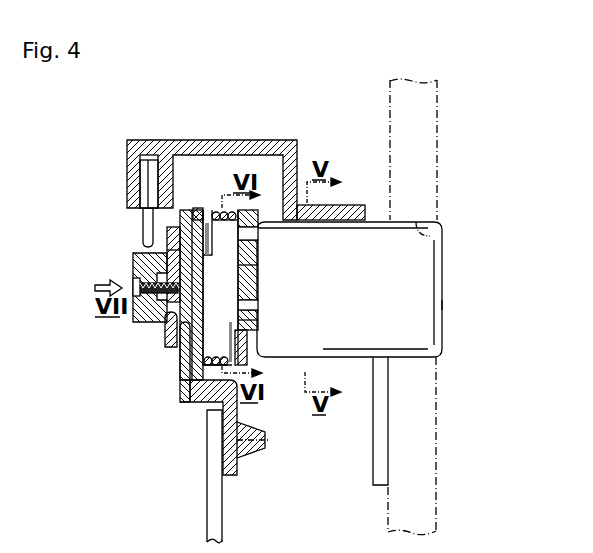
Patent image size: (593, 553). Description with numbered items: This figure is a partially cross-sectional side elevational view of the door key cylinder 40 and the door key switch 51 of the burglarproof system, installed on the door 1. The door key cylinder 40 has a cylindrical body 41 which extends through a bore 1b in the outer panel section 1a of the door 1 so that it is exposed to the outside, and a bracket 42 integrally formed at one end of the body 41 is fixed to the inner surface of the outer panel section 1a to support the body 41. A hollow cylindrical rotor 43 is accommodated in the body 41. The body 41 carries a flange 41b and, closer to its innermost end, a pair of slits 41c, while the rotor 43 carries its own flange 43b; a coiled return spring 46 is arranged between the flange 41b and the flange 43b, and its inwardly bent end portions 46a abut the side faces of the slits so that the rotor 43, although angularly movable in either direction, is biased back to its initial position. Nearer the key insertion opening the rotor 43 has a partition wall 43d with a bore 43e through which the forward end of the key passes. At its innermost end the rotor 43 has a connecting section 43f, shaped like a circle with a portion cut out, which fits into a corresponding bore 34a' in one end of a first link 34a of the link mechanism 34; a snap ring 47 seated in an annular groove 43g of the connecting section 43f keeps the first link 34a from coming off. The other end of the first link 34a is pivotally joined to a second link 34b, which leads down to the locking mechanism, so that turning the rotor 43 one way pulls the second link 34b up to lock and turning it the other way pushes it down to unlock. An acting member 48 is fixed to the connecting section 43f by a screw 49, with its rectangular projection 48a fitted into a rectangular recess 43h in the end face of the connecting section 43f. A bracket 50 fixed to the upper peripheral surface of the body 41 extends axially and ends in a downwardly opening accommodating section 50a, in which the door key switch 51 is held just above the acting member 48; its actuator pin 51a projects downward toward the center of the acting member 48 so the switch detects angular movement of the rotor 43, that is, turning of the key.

The door 1 is at (440, 422).
The outer panel section 1a is at (440, 162).
The bore 1b is at (435, 232).
The link mechanism 34 is at (206, 503).
The first link 34a is at (197, 427).
The bore 34a' is at (260, 287).
The second link 34b is at (216, 455).
The door key cylinder 40 is at (446, 305).
The cylindrical body 41 is at (420, 270).
The flange 41b is at (285, 212).
The slits 41c is at (249, 235).
The bracket 42 is at (380, 448).
The rotor 43 is at (255, 254).
The flange 43b is at (220, 210).
The partition wall 43d is at (252, 314).
The bore 43e is at (252, 290).
The connecting section 43f is at (182, 396).
The annular groove 43g is at (171, 335).
The rectangular recess 43h is at (140, 270).
The coiled return spring 46 is at (214, 212).
The bent end portions 46a is at (198, 210).
The snap ring 47 is at (185, 345).
The acting member 48 is at (172, 300).
The rectangular projection 48a is at (172, 258).
The screw 49 is at (136, 300).
The bracket 50 is at (270, 142).
The accommodating section 50a is at (148, 165).
The door key switch 51 is at (146, 193).
The actuator pin 51a is at (147, 238).